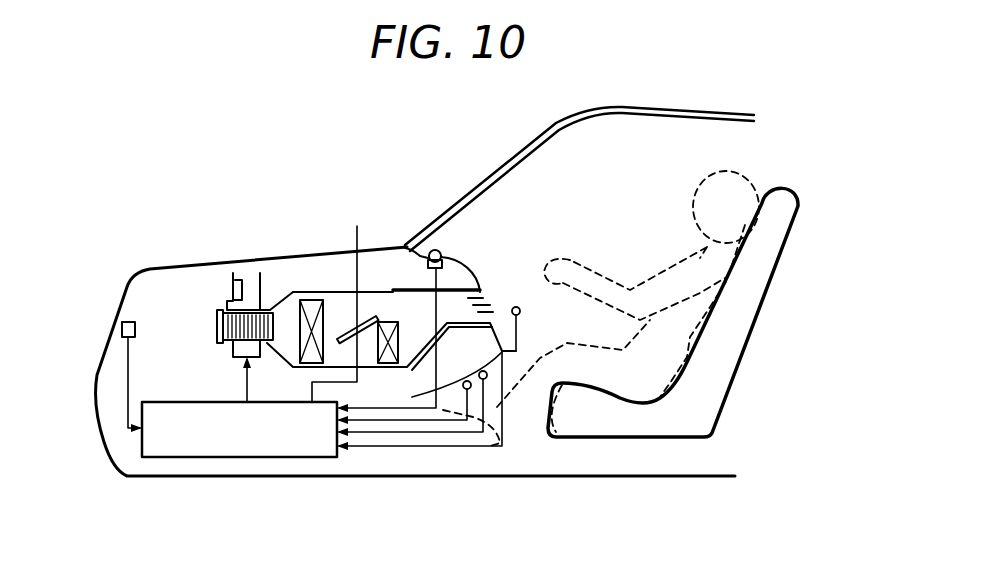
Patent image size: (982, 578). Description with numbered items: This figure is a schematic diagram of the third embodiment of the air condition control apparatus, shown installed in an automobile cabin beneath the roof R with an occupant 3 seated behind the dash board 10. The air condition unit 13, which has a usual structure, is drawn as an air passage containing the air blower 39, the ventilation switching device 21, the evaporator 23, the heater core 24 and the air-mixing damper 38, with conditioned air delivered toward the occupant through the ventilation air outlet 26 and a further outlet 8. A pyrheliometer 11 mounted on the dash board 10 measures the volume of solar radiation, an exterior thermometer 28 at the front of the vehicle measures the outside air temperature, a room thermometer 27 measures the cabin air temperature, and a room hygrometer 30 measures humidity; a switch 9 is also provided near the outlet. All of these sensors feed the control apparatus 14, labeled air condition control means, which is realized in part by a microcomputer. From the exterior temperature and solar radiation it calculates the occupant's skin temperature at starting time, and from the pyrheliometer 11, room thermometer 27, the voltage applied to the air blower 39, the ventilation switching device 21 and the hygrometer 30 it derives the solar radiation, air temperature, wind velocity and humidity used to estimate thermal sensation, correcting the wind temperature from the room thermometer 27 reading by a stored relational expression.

The roof R is at (527, 162).
The occupant 3 is at (718, 190).
The defroster air outlet 8 is at (481, 292).
The switch 9 is at (522, 312).
The dash board 10 is at (456, 277).
The pyrheliometer 11 is at (430, 252).
The air condition unit 13 is at (330, 293).
The control apparatus 14 is at (170, 458).
The ventilation switching device 21 is at (226, 291).
The evaporator 23 is at (306, 371).
The heater core 24 is at (387, 365).
The ventilation air outlet 26 is at (497, 307).
The room thermometer 27 is at (466, 380).
The exterior thermometer 28 is at (138, 330).
The room hygrometer 30 is at (493, 436).
The air-mixing damper 38 is at (345, 303).
The air blower 39 is at (226, 348).